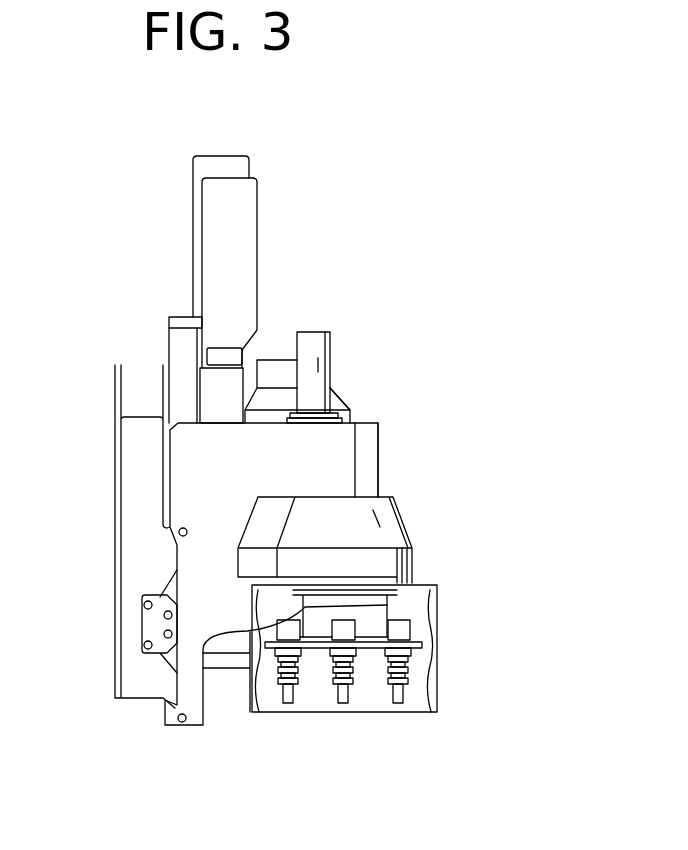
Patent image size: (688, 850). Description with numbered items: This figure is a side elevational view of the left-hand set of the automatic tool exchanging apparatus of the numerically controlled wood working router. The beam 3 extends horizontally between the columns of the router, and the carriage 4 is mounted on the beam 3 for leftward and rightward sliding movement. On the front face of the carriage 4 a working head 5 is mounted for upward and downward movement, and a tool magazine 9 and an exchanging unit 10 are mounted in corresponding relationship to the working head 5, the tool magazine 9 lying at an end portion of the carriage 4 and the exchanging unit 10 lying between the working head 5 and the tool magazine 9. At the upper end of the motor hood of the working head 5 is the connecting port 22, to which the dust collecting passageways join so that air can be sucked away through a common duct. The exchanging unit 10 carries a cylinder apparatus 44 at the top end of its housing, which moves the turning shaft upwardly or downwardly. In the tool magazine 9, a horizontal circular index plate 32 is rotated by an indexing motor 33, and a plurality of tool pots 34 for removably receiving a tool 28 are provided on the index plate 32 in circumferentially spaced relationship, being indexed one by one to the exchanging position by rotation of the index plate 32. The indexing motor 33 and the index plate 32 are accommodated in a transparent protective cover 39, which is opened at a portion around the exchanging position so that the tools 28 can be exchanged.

The beam 3 is at (128, 568).
The carriage 4 is at (313, 452).
The working head 5 is at (343, 402).
The tool magazine 9 is at (420, 515).
The exchanging unit 10 is at (373, 460).
The connecting port 22 is at (277, 370).
The tool 28 is at (297, 690).
The index plate 32 is at (430, 643).
The indexing motor 33 is at (325, 598).
The tool pot 34 is at (352, 625).
The transparent protective cover 39 is at (437, 698).
The cylinder apparatus 44 is at (328, 350).